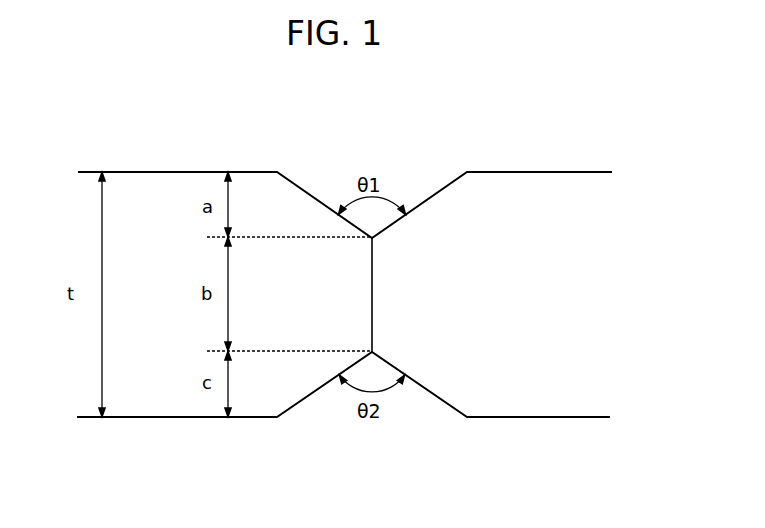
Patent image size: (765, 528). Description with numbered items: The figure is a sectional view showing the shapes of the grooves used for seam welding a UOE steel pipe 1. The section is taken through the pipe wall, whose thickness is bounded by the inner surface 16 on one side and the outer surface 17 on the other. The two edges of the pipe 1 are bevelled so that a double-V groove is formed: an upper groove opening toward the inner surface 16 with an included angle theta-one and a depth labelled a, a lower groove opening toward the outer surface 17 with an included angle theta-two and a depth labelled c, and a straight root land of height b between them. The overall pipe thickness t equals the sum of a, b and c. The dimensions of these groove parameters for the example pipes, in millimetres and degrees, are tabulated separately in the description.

The UOE steel pipe 1 is at (152, 197).
The inner surface 16 is at (539, 156).
The outer surface 17 is at (538, 436).